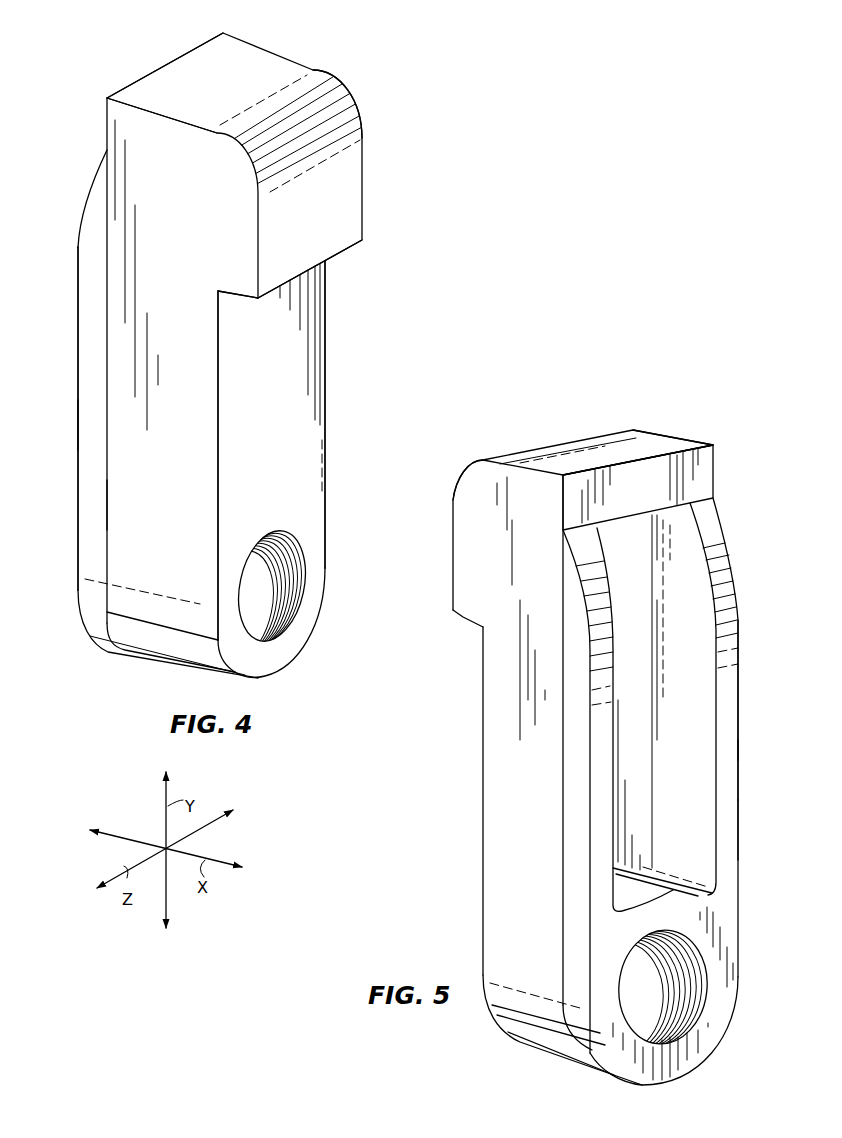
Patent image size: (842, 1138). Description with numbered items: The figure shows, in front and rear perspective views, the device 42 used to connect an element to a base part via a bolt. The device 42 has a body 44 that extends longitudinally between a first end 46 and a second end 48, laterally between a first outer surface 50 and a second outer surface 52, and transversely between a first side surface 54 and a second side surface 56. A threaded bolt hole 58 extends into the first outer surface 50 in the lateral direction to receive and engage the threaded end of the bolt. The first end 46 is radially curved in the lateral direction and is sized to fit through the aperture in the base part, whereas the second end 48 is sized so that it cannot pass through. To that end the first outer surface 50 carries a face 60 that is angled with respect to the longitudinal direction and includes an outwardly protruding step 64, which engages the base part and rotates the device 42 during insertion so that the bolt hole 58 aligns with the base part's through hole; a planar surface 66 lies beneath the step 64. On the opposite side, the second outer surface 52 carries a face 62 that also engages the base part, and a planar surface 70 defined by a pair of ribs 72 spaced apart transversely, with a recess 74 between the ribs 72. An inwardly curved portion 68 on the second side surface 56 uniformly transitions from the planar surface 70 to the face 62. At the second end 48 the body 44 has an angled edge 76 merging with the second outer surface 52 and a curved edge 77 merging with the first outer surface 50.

In FIG. 4, the device 42 is at (115, 52).
In FIG. 5, the device 42 is at (665, 382).
In FIG. 4, the body 44 is at (300, 437).
In FIG. 5, the body 44 is at (722, 1015).
In FIG. 4, the first end 46 is at (150, 670).
In FIG. 5, the first end 46 is at (706, 1066).
In FIG. 4, the second end 48 is at (237, 68).
In FIG. 5, the second end 48 is at (592, 425).
In FIG. 4, the first outer surface 50 is at (362, 337).
In FIG. 4, the second outer surface 52 is at (66, 339).
In FIG. 5, the second outer surface 52 is at (740, 686).
In FIG. 4, the first side surface 54 is at (172, 499).
In FIG. 5, the second side surface 56 is at (536, 791).
In FIG. 4, the threaded bolt hole 58 is at (275, 588).
In FIG. 5, the threaded bolt hole 58 is at (688, 972).
In FIG. 4, the face 60 is at (347, 255).
In FIG. 5, the face 60 is at (460, 626).
In FIG. 4, the face 62 is at (90, 125).
In FIG. 5, the face 62 is at (705, 475).
In FIG. 4, the outwardly protruding step 64 is at (271, 297).
In FIG. 5, the outwardly protruding step 64 is at (474, 628).
In FIG. 4, the planar surface 66 is at (287, 497).
In FIG. 4, the inwardly curved portion 68 is at (86, 192).
In FIG. 5, the inwardly curved portion 68 is at (580, 578).
In FIG. 4, the planar surface 70 is at (78, 428).
In FIG. 5, the planar surface 70 is at (728, 748).
In FIG. 4, the ribs 72 is at (88, 502).
In FIG. 5, the ribs 72 is at (725, 812).
In FIG. 5, the recess 74 is at (651, 609).
In FIG. 4, the angled edge 76 is at (160, 67).
In FIG. 5, the angled edge 76 is at (668, 452).
In FIG. 4, the curved edge 77 is at (323, 118).
In FIG. 5, the curved edge 77 is at (472, 458).